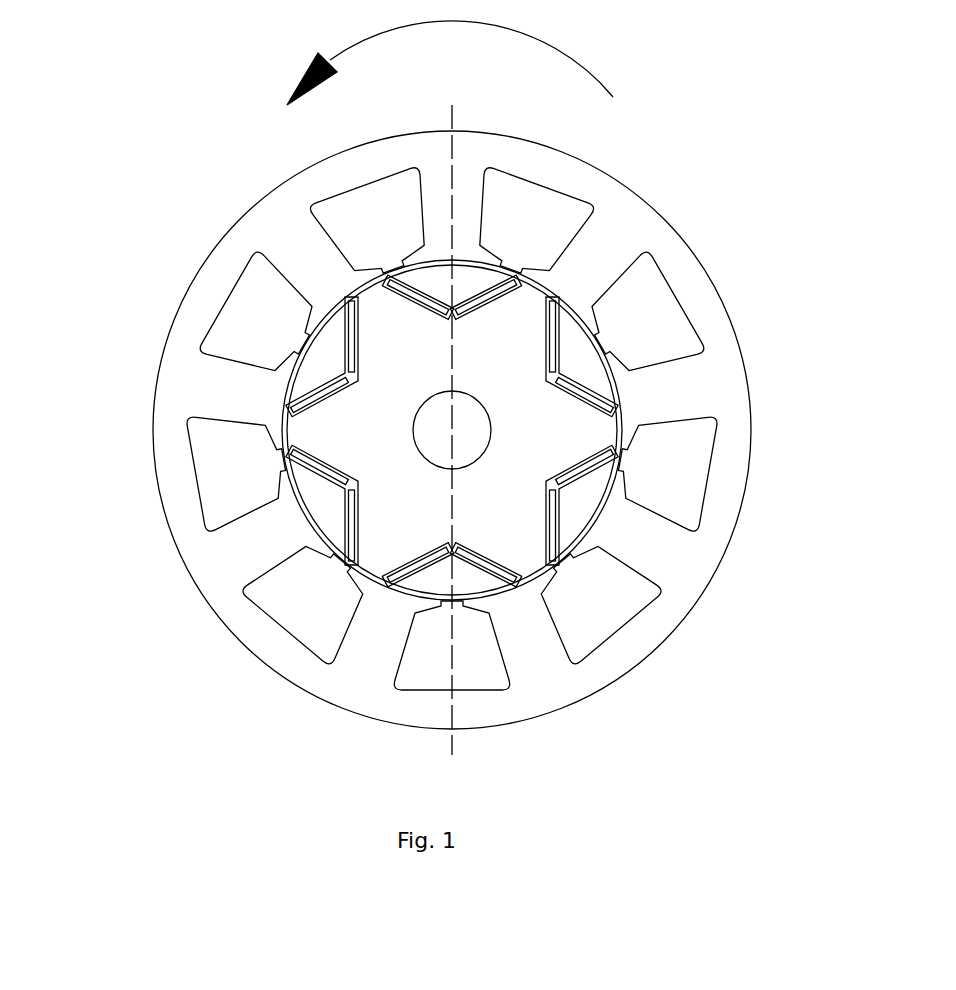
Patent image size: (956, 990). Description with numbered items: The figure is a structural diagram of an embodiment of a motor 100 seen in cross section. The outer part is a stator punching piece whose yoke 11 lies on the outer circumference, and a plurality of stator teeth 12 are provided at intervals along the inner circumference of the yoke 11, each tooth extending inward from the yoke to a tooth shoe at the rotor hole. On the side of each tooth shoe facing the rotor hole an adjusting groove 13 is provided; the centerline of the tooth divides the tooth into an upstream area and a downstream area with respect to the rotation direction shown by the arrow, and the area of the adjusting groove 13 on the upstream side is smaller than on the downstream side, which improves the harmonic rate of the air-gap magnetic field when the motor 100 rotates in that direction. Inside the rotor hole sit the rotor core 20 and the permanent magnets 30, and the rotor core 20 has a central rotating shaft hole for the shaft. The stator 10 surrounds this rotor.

The motor 100 is at (73, 103).
The stator 10 is at (243, 395).
The yoke 11 is at (673, 261).
The stator tooth 12 is at (667, 397).
The adjusting groove 13 is at (603, 532).
The rotor core 20 is at (290, 473).
The permanent magnet 30 is at (357, 543).